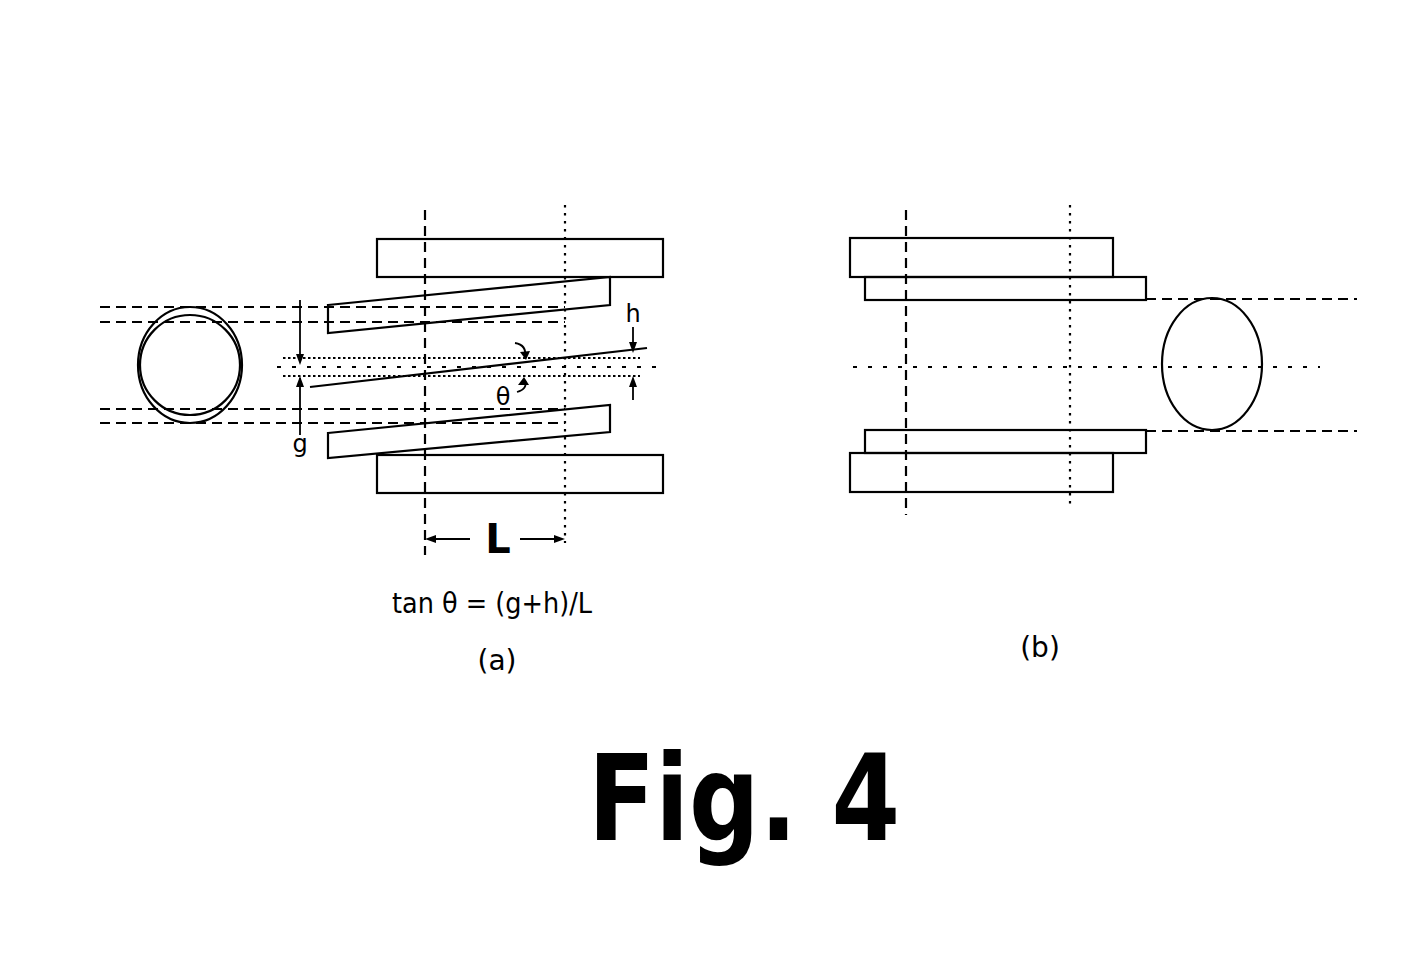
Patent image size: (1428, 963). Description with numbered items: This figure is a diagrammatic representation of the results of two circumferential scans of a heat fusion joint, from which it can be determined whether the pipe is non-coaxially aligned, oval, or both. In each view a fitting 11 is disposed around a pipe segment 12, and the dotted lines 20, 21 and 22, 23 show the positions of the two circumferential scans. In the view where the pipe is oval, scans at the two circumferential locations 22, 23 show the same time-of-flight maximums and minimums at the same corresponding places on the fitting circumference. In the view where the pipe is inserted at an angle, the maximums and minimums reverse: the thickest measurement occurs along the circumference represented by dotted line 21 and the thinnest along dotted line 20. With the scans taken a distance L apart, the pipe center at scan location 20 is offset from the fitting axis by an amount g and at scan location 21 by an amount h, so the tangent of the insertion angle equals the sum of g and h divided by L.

The fitting 11 is at (1090, 492).
The pipe segment 12 is at (1130, 275).
The dotted line 20 is at (423, 215).
The dotted line 21 is at (563, 225).
The circumferential location 22 is at (905, 207).
The circumferential location 23 is at (1070, 205).